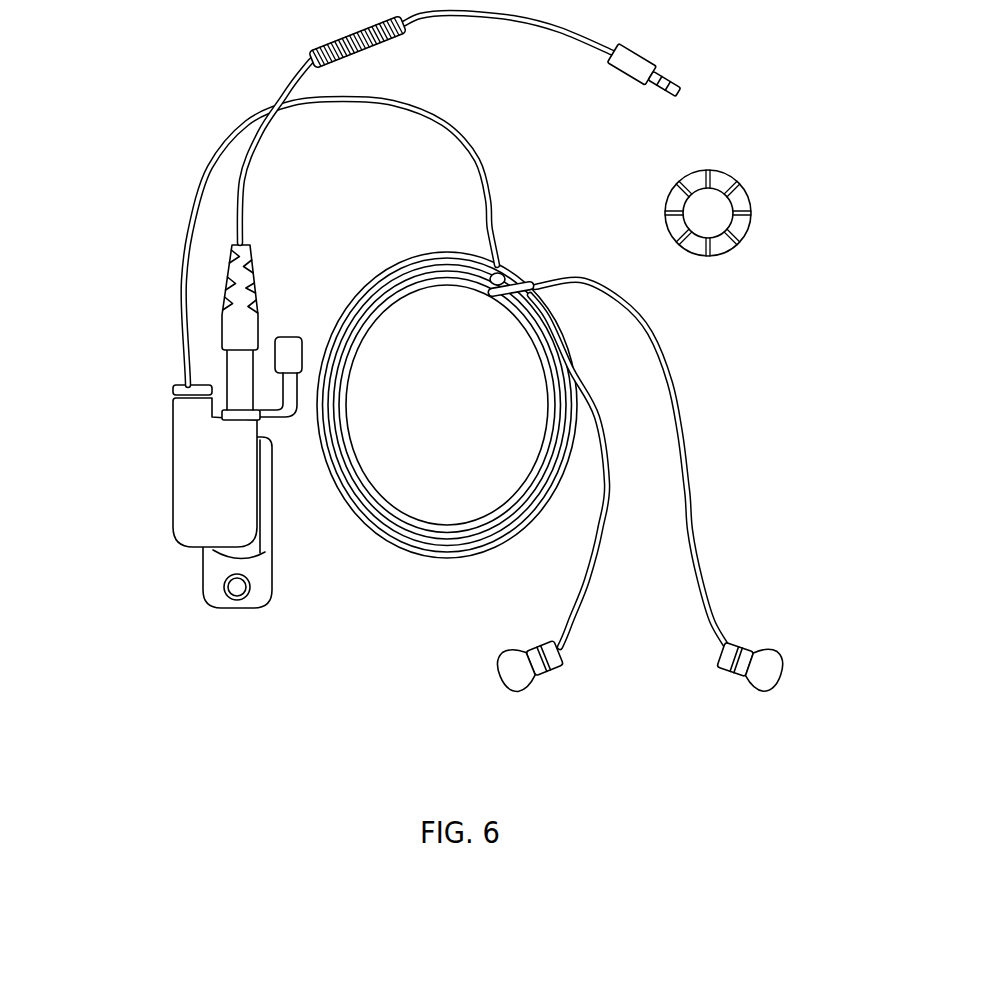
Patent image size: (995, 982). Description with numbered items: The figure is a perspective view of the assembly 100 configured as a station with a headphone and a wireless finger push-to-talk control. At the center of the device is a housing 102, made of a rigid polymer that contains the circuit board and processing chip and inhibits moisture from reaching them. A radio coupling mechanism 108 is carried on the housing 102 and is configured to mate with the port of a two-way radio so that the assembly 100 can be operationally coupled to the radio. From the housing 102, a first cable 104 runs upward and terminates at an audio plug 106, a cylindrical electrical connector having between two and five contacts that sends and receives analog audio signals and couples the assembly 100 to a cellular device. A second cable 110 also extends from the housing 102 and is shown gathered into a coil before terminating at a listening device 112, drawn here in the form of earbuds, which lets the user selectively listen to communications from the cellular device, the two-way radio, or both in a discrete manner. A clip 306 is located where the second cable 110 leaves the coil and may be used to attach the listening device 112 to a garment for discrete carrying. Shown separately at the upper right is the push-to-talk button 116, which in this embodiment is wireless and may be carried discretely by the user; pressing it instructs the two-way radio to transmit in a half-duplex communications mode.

The assembly 100 is at (127, 378).
The housing 102 is at (173, 516).
The first cable 104 is at (427, 18).
The audio plug 106 is at (650, 76).
The radio coupling mechanism 108 is at (265, 550).
The second cable 110 is at (192, 233).
The listening device 112 is at (777, 657).
The push-to-talk button 116 is at (743, 240).
The clip 306 is at (520, 287).